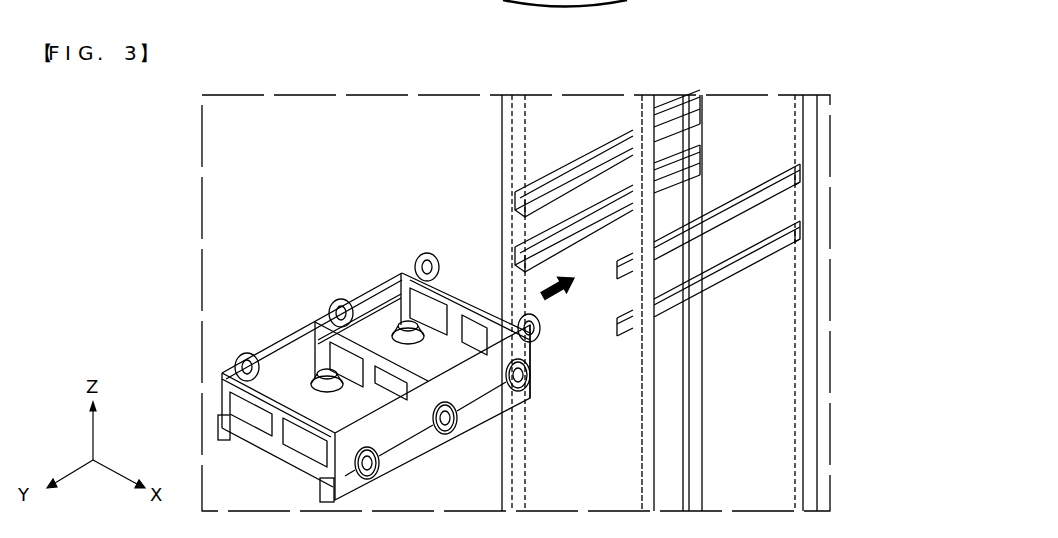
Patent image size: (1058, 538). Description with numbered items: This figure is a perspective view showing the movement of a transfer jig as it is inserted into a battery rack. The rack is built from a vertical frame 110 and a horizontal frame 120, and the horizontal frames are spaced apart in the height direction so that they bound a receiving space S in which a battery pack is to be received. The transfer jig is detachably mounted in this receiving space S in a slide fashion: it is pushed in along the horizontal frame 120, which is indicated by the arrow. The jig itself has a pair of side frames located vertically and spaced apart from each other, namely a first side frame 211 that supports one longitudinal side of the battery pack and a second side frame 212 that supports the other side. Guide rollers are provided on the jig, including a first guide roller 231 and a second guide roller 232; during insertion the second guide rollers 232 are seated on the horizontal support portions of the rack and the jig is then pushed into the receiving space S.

The vertical frame 110 is at (504, 133).
The horizontal frame 120 is at (516, 206).
The receiving space S is at (781, 216).
The first side frame 211 is at (272, 345).
The second side frame 212 is at (395, 447).
The first guide roller 231 is at (340, 300).
The second guide roller 232 is at (450, 434).